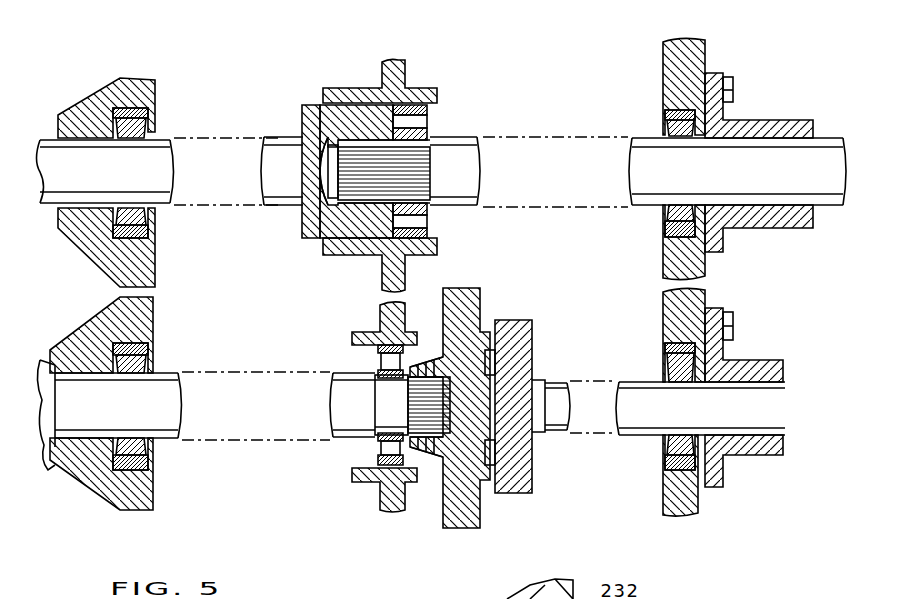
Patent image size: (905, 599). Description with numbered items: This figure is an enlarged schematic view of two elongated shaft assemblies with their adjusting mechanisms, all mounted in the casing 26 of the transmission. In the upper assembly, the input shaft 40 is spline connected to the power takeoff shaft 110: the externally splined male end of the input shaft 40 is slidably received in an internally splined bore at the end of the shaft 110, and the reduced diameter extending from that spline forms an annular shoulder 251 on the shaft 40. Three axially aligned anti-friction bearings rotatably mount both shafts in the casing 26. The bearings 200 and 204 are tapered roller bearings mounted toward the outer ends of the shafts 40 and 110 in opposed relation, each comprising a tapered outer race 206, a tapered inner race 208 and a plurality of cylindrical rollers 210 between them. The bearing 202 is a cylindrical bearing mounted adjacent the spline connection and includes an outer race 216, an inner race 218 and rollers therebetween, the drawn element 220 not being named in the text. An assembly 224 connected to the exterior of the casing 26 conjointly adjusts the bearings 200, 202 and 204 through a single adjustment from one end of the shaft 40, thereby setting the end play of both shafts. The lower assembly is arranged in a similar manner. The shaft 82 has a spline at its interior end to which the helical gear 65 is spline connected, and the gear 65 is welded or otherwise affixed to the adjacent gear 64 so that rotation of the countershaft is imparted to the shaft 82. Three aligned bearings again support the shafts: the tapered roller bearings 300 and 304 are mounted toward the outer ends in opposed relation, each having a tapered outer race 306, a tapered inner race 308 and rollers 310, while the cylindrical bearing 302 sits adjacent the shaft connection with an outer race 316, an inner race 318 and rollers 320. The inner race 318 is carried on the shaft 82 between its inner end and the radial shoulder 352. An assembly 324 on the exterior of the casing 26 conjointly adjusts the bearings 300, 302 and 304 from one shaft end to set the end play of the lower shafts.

The casing 26 is at (145, 80).
The power takeoff shaft 110 is at (160, 168).
The tapered outer race 206 is at (150, 112).
The tapered inner race 208 is at (150, 128).
The tapered roller bearing 204 is at (152, 219).
The rollers 210 is at (148, 232).
The annular shoulder 251 is at (428, 168).
The outer race 216 is at (428, 110).
The inner race 218 is at (428, 133).
The bearing 220 is at (430, 216).
The cylindrical bearing 202 is at (434, 235).
The input shaft 40 is at (737, 171).
The adjusting assembly 224 is at (752, 104).
The tapered roller bearing 200 is at (661, 216).
The shaft 82 is at (165, 397).
The tapered outer race 306 is at (148, 350).
The tapered inner race 308 is at (150, 368).
The rollers 310 is at (150, 453).
The tapered roller bearing 304 is at (151, 466).
The radial shoulder 352 is at (383, 398).
The outer race 316 is at (376, 348).
The inner race 318 is at (376, 371).
The rollers 320 is at (374, 446).
The cylindrical bearing 302 is at (372, 462).
The helical gear 65 is at (478, 298).
The gear 64 is at (526, 352).
The adjusting assembly 324 is at (752, 459).
The tapered roller bearing 300 is at (656, 351).